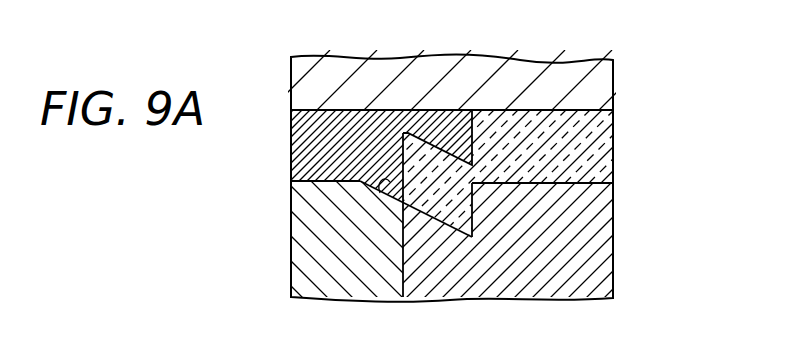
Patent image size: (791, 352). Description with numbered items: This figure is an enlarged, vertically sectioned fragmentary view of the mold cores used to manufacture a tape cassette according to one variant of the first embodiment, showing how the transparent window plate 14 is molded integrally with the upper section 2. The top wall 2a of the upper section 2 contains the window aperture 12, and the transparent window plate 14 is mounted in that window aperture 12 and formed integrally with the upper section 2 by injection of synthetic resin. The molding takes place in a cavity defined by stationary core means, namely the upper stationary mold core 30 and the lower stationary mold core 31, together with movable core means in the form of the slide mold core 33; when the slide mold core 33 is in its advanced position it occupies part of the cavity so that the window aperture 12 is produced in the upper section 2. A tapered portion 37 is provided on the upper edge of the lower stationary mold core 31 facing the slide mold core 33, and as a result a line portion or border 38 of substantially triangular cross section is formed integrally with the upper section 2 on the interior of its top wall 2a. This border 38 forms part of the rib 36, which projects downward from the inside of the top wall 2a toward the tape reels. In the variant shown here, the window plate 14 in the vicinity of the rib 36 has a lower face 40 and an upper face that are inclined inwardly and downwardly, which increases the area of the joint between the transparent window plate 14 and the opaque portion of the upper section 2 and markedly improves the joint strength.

The upper section 2 is at (289, 132).
The top wall 2a is at (326, 130).
The window aperture 12 is at (482, 148).
The transparent window plate 14 is at (619, 133).
The upper stationary mold core 30 is at (533, 82).
The lower stationary mold core 31 is at (313, 235).
The slide mold core 33 is at (550, 265).
The rib 36 is at (441, 193).
The tapered portion 37 is at (380, 193).
The line portion or border 38 is at (389, 188).
The lower face 40 is at (404, 133).